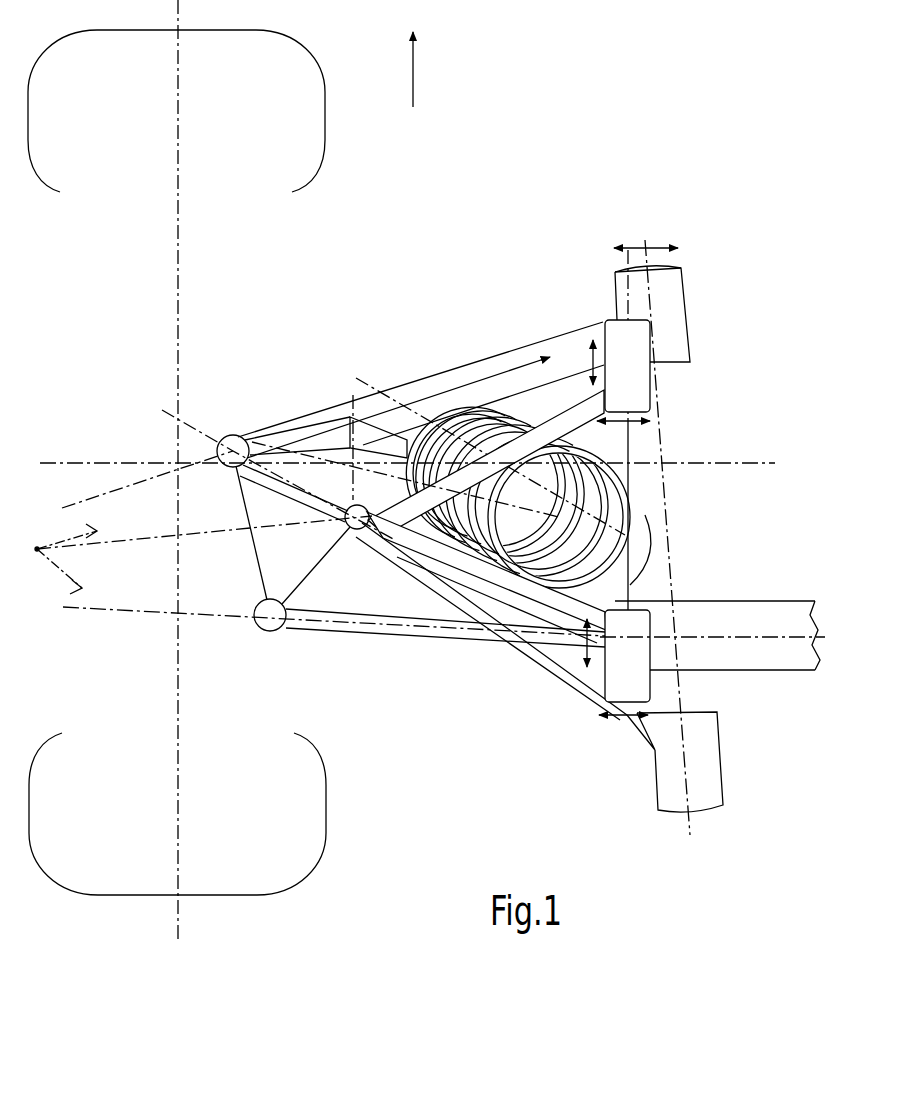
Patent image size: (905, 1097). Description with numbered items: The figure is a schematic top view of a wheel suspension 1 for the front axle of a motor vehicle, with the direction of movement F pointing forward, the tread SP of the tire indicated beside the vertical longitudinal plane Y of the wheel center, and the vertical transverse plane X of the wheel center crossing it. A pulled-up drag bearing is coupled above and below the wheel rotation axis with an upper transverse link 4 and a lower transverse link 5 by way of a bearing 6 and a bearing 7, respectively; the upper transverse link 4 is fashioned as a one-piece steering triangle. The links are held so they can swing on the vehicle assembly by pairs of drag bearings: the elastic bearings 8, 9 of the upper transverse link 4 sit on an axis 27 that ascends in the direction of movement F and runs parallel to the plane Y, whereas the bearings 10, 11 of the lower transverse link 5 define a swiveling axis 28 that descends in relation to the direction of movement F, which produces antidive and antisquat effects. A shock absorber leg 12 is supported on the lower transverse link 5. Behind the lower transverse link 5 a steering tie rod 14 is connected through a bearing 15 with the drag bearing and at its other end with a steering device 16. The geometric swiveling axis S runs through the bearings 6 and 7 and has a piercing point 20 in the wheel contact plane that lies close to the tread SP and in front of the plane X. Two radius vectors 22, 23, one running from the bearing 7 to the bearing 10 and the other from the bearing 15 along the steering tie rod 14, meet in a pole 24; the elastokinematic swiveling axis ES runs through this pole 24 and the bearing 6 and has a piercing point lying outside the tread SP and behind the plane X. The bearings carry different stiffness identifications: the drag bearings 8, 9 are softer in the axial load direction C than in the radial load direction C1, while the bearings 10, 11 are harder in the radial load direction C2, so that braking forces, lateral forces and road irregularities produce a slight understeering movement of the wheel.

The wheel suspension 1 is at (402, 345).
The upper transverse link 4 is at (525, 410).
The lower transverse link 5 is at (470, 360).
The bearing 6 is at (357, 530).
The bearing 7 is at (238, 434).
The drag bearing 8 is at (648, 390).
The drag bearing 9 is at (650, 627).
The drag bearing 10 is at (678, 285).
The drag bearing 11 is at (707, 740).
The shock absorber leg 12 is at (636, 480).
The steering tie rod 14 is at (437, 630).
The bearing 15 is at (268, 632).
The steering device 16 is at (780, 613).
The piercing point 20 is at (162, 410).
The radius vector 22 is at (133, 457).
The radius vector 23 is at (137, 610).
The pole 24 is at (37, 554).
The axis 27 is at (650, 573).
The swiveling axis 28 is at (670, 515).
The geometric swiveling axis S is at (300, 488).
The elastokinematic swiveling axis ES is at (130, 541).
The axial load direction C is at (590, 383).
The radial load direction C1 is at (650, 425).
The radial load direction C2 is at (644, 247).
The direction of movement F is at (423, 69).
The tread SP is at (182, 128).
The vertical transverse plane of the center of the wheel X is at (409, 459).
The vertical longitudinal plane of the center of the wheel Y is at (177, 488).